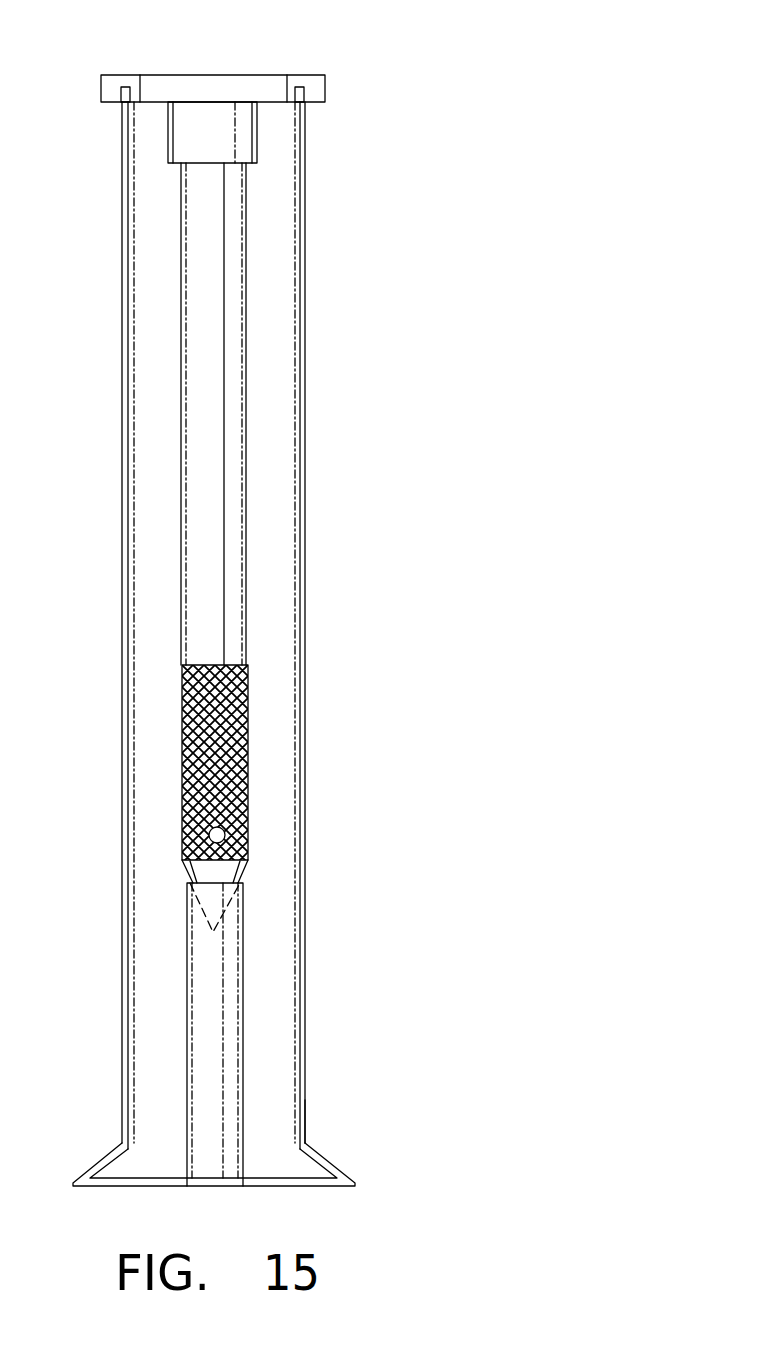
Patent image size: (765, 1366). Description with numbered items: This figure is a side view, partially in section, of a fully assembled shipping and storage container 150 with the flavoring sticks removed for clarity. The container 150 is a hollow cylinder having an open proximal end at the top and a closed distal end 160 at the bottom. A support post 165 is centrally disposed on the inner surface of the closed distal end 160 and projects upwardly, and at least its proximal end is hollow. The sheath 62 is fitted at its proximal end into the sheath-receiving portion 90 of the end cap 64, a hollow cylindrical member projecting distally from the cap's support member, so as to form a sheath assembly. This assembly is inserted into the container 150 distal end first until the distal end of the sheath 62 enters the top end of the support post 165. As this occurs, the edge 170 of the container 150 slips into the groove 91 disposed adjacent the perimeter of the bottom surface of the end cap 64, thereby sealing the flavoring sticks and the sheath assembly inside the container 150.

The end cap 64 is at (338, 86).
The groove 91 is at (125, 84).
The edge 170 is at (298, 84).
The sheath-receiving portion 90 is at (158, 140).
The sheath 62 is at (278, 486).
The container 150 is at (324, 810).
The support post 165 is at (268, 1013).
The closed distal end 160 is at (332, 1129).